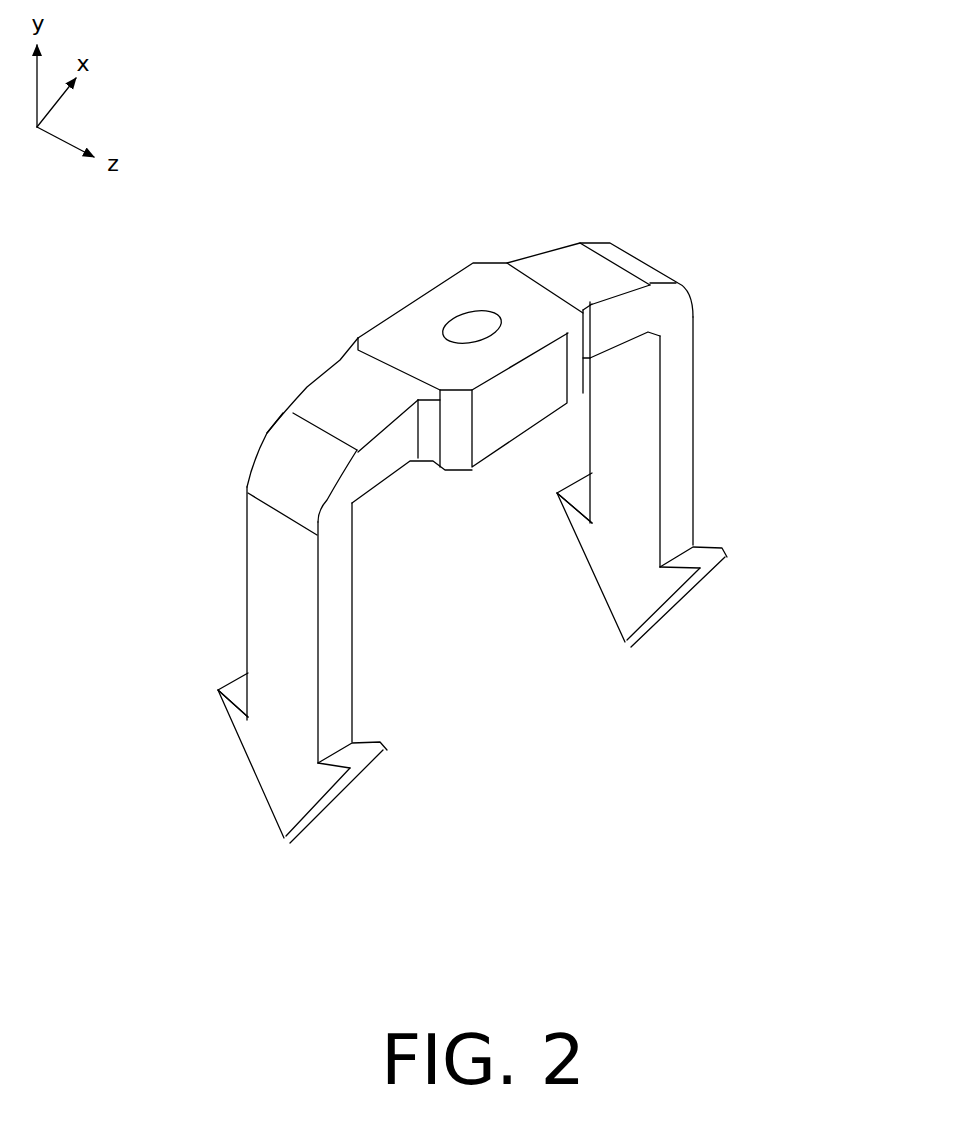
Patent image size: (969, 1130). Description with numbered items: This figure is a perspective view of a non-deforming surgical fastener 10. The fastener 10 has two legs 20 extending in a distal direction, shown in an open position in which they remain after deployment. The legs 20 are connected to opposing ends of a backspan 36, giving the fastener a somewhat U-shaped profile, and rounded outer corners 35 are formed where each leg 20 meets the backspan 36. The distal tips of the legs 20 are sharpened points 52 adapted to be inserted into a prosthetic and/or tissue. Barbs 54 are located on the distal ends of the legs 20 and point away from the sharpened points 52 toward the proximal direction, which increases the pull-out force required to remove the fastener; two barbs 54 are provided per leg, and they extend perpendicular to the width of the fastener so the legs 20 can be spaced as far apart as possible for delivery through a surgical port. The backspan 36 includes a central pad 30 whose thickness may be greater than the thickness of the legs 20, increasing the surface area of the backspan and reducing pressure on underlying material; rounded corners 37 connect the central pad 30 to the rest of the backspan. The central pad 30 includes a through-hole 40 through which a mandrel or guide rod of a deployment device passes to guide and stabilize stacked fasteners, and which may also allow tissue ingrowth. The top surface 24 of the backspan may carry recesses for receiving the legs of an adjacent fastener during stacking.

The surgical fastener 10 is at (622, 147).
The legs 20 is at (262, 605).
The top surface 24 is at (573, 265).
The central pad 30 is at (472, 262).
The outer corners 35 is at (275, 453).
The backspan 36 is at (318, 329).
The rounded corners 37 is at (455, 440).
The through-hole 40 is at (458, 326).
The sharpened points 52 is at (283, 848).
The barbs 54 is at (203, 681).